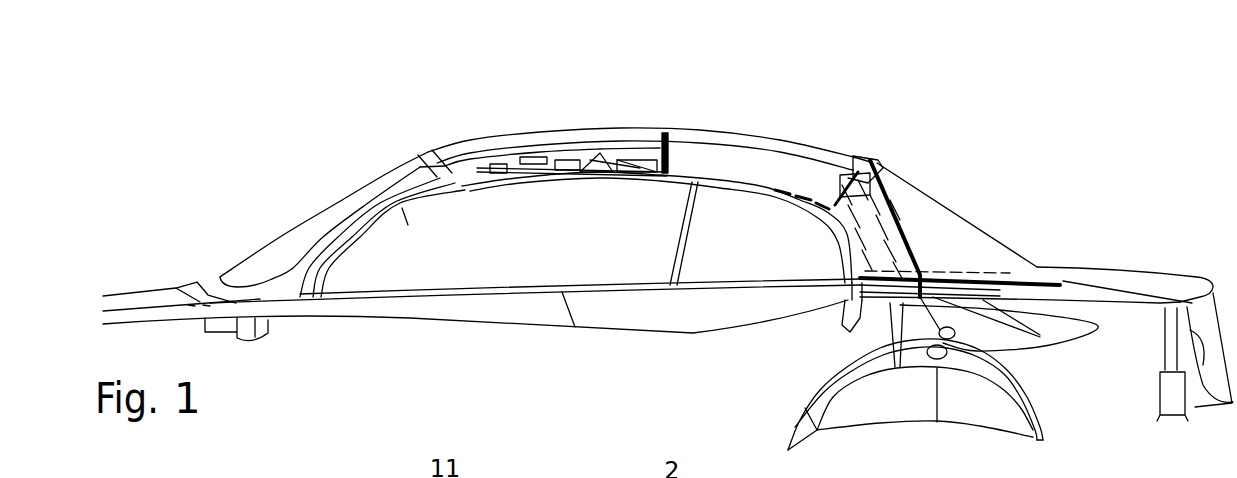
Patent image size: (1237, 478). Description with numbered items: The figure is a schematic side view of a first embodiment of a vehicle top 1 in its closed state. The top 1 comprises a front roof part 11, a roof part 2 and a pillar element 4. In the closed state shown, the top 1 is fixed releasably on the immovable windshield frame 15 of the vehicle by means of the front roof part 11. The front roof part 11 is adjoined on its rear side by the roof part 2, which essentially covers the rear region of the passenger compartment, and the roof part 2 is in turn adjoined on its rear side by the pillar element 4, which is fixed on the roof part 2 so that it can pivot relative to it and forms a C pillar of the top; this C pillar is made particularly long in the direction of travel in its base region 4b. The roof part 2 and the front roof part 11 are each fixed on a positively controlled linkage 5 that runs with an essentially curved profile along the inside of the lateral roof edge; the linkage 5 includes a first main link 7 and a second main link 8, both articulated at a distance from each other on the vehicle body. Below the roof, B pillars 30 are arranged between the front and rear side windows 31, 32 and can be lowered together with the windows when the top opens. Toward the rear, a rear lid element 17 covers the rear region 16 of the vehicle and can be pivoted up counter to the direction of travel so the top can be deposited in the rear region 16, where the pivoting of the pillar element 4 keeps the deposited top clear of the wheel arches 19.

The top 1 is at (780, 70).
The roof part 2 is at (656, 119).
The front roof part 11 is at (508, 143).
The windshield frame 15 is at (435, 148).
The linkage 5 is at (770, 210).
The front side window 31 is at (460, 253).
The rear side window 32 is at (694, 274).
The B pillar 30 is at (670, 267).
The first main link 7 is at (873, 267).
The second main link 8 is at (887, 237).
The pillar element 4 is at (930, 215).
The base region 4b is at (980, 293).
The rear lid element 17 is at (1105, 288).
The rear region 16 is at (1106, 355).
The wheel arch 19 is at (864, 419).